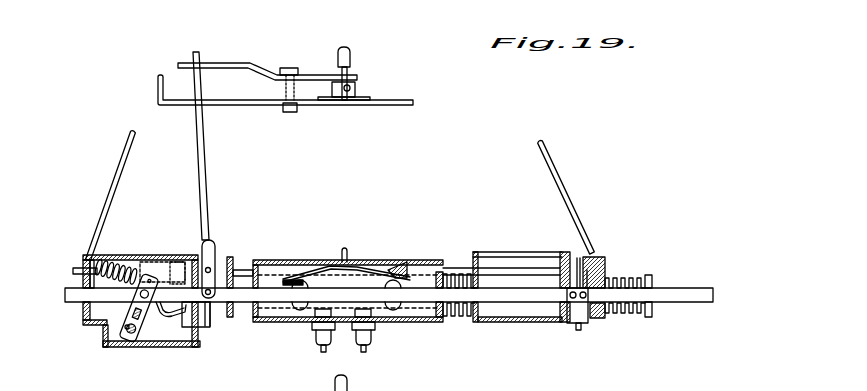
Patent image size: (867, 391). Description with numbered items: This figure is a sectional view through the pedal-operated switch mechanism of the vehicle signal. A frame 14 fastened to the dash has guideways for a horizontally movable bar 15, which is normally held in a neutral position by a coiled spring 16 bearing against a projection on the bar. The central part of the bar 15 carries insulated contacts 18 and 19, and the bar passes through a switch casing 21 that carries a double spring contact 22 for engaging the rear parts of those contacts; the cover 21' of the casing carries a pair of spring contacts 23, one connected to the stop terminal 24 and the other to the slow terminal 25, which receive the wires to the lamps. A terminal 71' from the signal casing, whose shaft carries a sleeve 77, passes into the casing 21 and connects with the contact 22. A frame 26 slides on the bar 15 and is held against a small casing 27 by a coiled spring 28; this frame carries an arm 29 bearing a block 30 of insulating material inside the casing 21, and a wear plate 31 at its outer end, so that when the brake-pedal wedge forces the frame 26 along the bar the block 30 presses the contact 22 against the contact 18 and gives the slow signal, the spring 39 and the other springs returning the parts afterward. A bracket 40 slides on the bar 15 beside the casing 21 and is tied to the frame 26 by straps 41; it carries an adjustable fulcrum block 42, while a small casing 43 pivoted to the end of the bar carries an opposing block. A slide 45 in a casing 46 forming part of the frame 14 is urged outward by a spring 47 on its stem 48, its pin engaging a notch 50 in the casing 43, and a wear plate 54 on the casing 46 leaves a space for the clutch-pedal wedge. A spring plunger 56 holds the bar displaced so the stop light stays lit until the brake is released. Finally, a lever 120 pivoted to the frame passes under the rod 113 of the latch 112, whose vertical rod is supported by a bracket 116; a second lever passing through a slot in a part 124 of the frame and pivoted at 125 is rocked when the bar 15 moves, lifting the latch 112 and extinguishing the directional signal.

The frame 14 is at (108, 200).
The horizontally movable bar 15 is at (468, 303).
The coiled spring 16 is at (610, 278).
The contact 18 is at (407, 272).
The contact 19 is at (303, 280).
The switch casing 21 is at (348, 274).
The cover 21' is at (332, 351).
The double spring contact 22 is at (362, 268).
The spring contacts 23 is at (300, 322).
The stop terminal 24 is at (323, 345).
The slow terminal 25 is at (376, 340).
The frame 26 is at (510, 323).
The small casing 27 is at (570, 327).
The coiled spring 28 is at (196, 52).
The arm 29 is at (498, 275).
The block of insulating material 30 is at (400, 262).
The wear plate 31 is at (552, 253).
The spring 39 is at (595, 247).
The bracket 40 is at (211, 323).
The straps 41 is at (242, 273).
The fulcrum block 42 is at (182, 312).
The small casing 43 is at (133, 342).
The slide 45 is at (163, 255).
The casing 46 is at (92, 328).
The spring 47 is at (123, 255).
The stem 48 is at (78, 268).
The notch 50 is at (124, 302).
The wear plate 54 is at (193, 253).
The spring plunger 56 is at (600, 265).
The terminal 71' is at (351, 232).
The sleeve 77 is at (648, 278).
The latch 112 is at (350, 88).
The rod 113 is at (338, 55).
The bracket 116 is at (340, 100).
The lever 120 is at (233, 64).
The part of the frame 124 is at (257, 105).
The pivot 125 is at (212, 257).